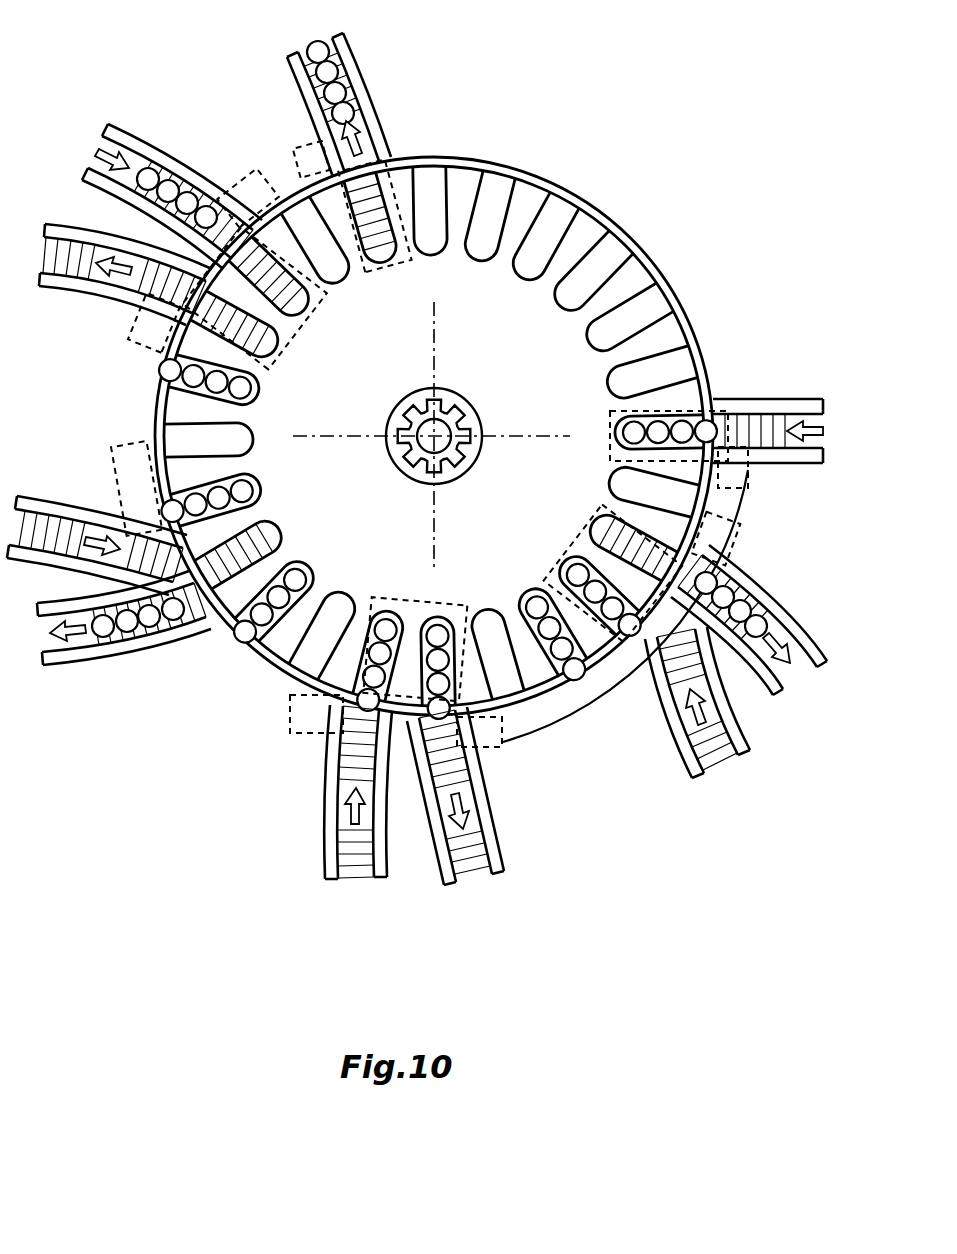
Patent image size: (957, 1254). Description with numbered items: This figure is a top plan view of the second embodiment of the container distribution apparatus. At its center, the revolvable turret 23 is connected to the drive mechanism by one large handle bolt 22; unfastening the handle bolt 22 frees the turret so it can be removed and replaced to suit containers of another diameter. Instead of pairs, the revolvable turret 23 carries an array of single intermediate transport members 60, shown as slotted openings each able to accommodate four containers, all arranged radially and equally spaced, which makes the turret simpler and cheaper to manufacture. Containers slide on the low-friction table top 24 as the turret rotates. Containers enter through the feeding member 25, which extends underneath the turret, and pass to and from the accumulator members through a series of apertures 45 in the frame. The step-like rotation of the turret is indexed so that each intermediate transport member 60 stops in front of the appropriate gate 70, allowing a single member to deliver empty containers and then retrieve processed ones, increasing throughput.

The handle bolt 22 is at (453, 418).
The revolvable turret 23 is at (540, 507).
The table top 24 is at (682, 286).
The feeding member 25 is at (780, 420).
The apertures 45 is at (130, 512).
The intermediate transport members 60 is at (578, 210).
The gates 70 is at (244, 212).